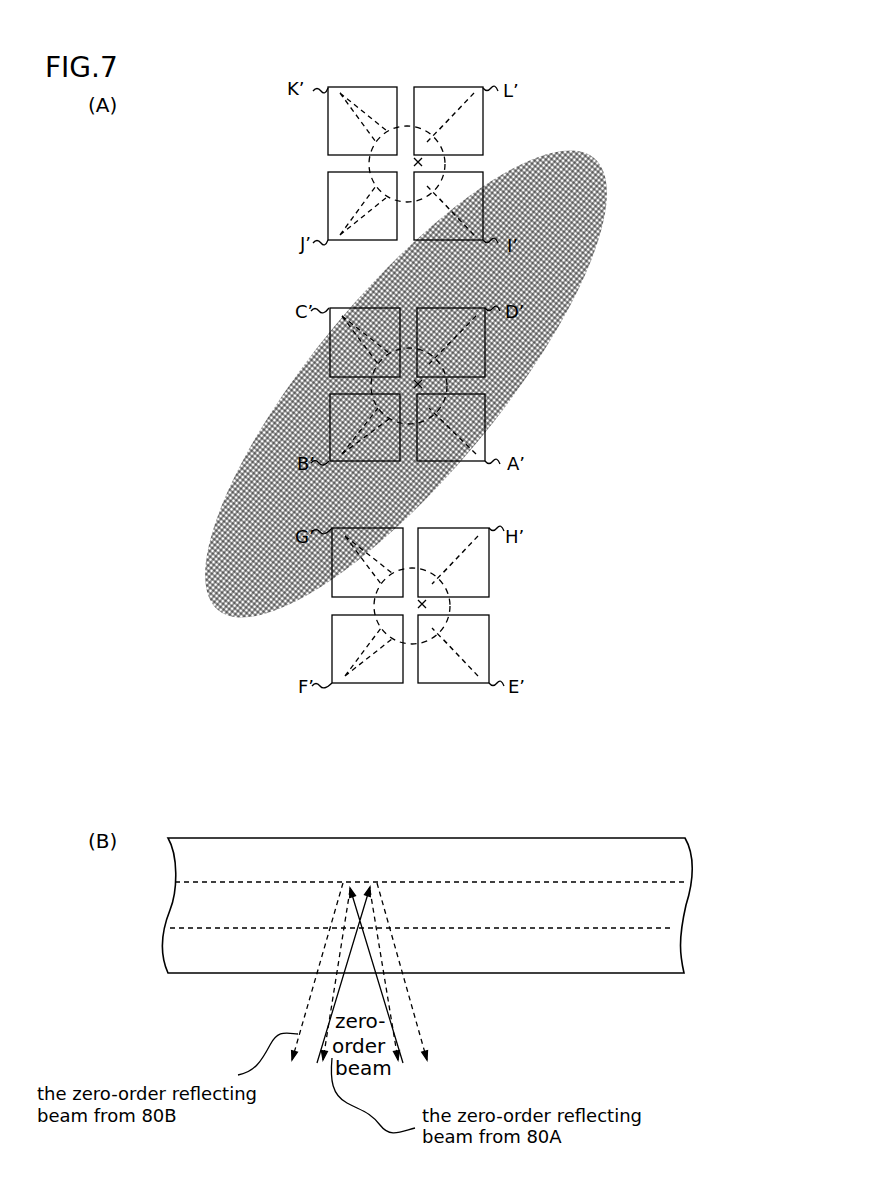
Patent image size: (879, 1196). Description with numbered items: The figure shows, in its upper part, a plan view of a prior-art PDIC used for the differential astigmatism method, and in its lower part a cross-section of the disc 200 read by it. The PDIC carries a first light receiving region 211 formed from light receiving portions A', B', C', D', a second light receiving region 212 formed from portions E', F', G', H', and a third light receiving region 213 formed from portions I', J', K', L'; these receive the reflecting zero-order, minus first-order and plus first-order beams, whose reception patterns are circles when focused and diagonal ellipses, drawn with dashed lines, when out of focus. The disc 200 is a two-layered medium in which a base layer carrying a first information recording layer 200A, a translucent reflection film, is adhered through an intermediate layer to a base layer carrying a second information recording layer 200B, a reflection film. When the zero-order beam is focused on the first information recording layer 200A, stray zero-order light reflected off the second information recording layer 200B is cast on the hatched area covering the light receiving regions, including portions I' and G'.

In FIG. 7A, the first light receiving region 211 is at (372, 384).
In FIG. 7A, the second light receiving region 212 is at (381, 605).
In FIG. 7A, the third light receiving region 213 is at (371, 163).
In FIG. 7B, the disc 200 is at (427, 895).
In FIG. 7B, the first information recording layer 200A is at (421, 918).
In FIG. 7B, the second information recording layer 200B is at (431, 873).